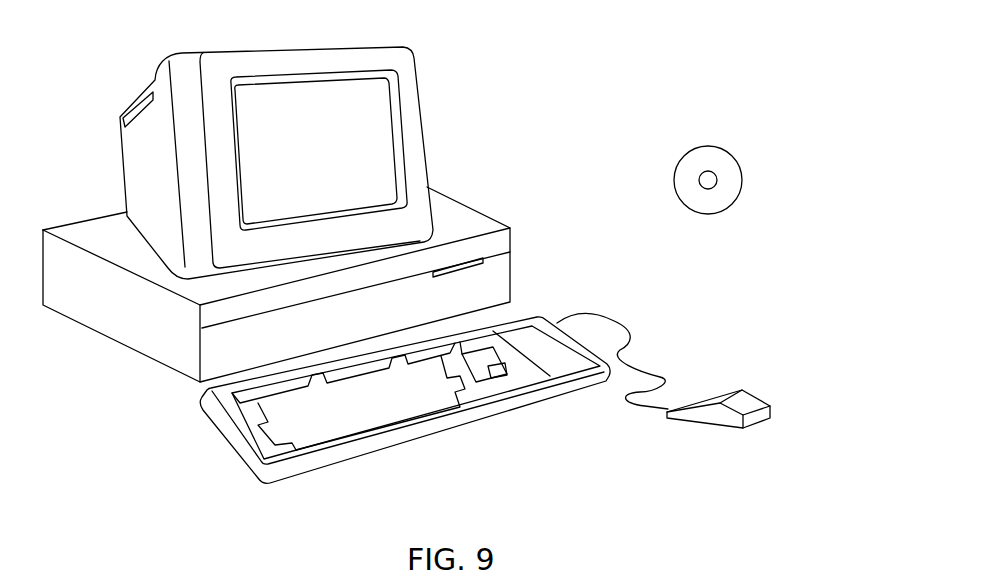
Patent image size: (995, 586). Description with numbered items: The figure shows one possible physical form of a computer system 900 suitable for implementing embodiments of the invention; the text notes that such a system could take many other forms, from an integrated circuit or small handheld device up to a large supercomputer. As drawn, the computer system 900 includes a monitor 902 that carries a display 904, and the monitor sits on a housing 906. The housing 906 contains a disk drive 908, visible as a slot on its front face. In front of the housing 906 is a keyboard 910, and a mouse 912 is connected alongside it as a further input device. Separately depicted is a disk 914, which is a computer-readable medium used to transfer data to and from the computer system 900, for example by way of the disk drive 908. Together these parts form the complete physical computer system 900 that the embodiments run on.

The computer system 900 is at (435, 251).
The monitor 902 is at (314, 163).
The display 904 is at (387, 112).
The housing 906 is at (307, 302).
The disk drive 908 is at (486, 254).
The keyboard 910 is at (400, 433).
The mouse 912 is at (758, 397).
The disk 914 is at (725, 148).